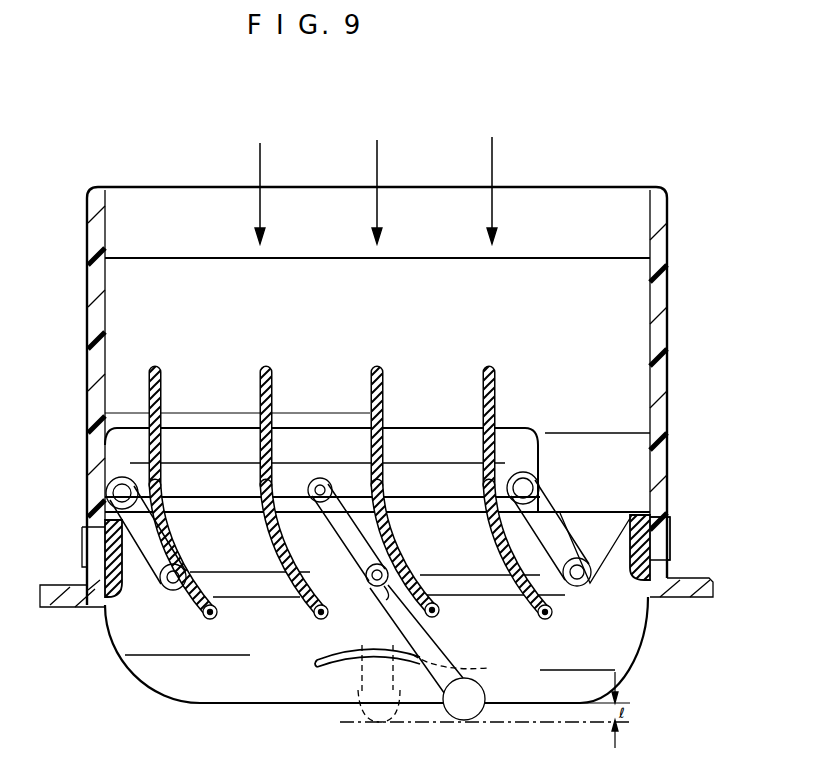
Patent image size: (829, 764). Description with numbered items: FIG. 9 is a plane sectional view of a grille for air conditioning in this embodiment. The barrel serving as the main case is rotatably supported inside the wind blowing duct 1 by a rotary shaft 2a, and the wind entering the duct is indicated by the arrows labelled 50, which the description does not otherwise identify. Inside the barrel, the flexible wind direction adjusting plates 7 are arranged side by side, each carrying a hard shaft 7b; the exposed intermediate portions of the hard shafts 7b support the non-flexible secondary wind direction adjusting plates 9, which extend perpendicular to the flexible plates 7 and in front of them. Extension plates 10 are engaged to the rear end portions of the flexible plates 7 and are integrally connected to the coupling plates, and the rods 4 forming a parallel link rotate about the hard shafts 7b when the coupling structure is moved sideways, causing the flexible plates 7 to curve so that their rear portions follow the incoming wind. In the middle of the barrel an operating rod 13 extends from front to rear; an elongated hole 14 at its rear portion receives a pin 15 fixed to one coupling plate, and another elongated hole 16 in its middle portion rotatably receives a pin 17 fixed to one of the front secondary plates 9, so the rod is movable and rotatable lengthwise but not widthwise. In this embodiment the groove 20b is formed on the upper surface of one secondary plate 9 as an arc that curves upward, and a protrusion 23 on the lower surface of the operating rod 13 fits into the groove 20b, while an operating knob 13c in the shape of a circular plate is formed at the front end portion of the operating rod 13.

The wind blowing duct 1 is at (667, 290).
The rotary shaft 2a is at (670, 525).
The rods 4 is at (542, 497).
The flexible wind direction adjusting plates 7 is at (270, 542).
The hard shafts 7b is at (570, 616).
The secondary wind direction adjusting plates 9 is at (240, 698).
The extension plates 10 is at (510, 355).
The operating rod 13 is at (435, 640).
The operating knob 13c is at (385, 724).
The elongated hole 14 is at (333, 513).
The pin 15 is at (330, 477).
The elongated hole 16 is at (381, 593).
The pin 17 is at (365, 575).
The groove 20b is at (316, 663).
The protrusion 23 is at (464, 667).
The articles (direction of insertion) 50 is at (507, 142).